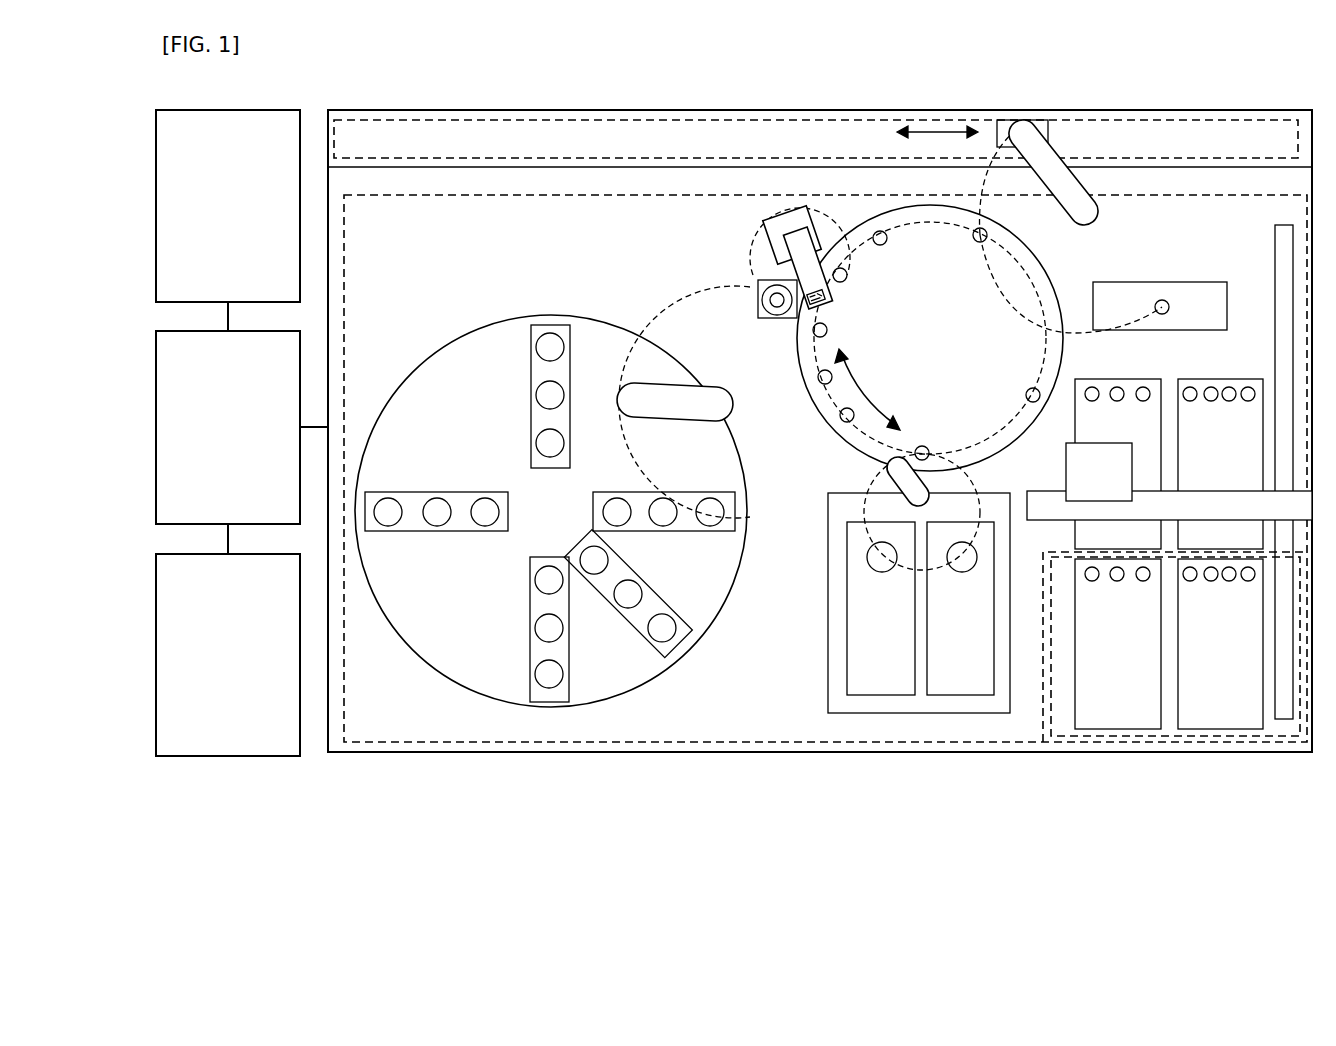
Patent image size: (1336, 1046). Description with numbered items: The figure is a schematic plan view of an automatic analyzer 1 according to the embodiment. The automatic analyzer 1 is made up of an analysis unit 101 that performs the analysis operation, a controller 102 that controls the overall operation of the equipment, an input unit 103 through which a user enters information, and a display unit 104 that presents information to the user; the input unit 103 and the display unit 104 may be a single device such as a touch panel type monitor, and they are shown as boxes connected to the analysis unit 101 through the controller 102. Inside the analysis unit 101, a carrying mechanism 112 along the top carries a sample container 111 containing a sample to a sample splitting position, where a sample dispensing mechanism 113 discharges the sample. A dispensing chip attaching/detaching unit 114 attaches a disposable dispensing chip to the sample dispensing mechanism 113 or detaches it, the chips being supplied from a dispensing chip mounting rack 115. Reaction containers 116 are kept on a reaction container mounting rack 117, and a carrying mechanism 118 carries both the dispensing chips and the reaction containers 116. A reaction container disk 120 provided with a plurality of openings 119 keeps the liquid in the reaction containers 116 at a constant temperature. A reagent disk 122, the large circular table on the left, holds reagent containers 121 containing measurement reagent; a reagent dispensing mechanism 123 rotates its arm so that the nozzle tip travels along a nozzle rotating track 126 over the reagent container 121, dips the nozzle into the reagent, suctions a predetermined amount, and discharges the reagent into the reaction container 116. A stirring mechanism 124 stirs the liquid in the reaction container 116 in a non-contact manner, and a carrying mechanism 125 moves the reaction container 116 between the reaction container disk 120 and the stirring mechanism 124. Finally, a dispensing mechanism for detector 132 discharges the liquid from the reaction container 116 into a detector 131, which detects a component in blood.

The automatic analyzer 1 is at (729, 890).
The analysis unit 101 is at (552, 770).
The controller 102 is at (210, 441).
The input unit 103 is at (210, 668).
The display unit 104 is at (210, 219).
The sample container 111 is at (1007, 122).
The carrying mechanism 112 is at (362, 127).
The sample dispensing mechanism 113 is at (1053, 155).
The dispensing chip attaching/detaching unit 114 is at (1165, 282).
The dispensing chip mounting rack 115 is at (1219, 710).
The reaction container 116 is at (1125, 386).
The reaction container mounting rack 117 is at (1119, 710).
The carrying mechanism 118 is at (1066, 475).
The openings 119 is at (888, 244).
The reaction container disk 120 is at (917, 354).
The reagent container 121 is at (548, 344).
The reagent disk 122 is at (425, 652).
The reagent dispensing mechanism 123 is at (738, 406).
The stirring mechanism 124 is at (757, 285).
The carrying mechanism 125 is at (778, 214).
The nozzle rotating track 126 is at (653, 323).
The detector 131 is at (916, 714).
The dispensing mechanism for detector 132 is at (889, 482).